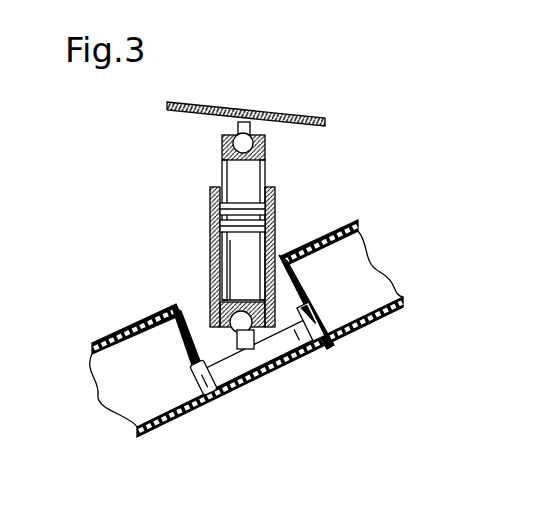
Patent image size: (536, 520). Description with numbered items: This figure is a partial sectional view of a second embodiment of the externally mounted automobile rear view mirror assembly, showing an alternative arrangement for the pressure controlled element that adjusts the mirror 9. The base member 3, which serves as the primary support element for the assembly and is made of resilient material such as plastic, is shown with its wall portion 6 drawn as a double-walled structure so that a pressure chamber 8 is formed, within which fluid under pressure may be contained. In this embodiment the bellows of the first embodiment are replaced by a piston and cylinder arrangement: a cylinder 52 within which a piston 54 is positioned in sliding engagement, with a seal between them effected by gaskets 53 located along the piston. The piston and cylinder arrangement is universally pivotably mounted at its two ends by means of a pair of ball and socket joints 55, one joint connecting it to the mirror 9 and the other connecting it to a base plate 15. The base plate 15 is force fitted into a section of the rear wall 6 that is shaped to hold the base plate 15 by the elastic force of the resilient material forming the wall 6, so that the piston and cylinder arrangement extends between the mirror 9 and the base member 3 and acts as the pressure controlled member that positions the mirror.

The base member 3 is at (357, 340).
The wall portion 6 is at (165, 434).
The pressure chamber 8 is at (158, 371).
The mirror 9 is at (300, 115).
The base plate 15 is at (268, 363).
The cylinder 52 is at (212, 265).
The gaskets 53 is at (218, 223).
The piston 54 is at (266, 163).
The ball and socket joints 55 is at (234, 133).